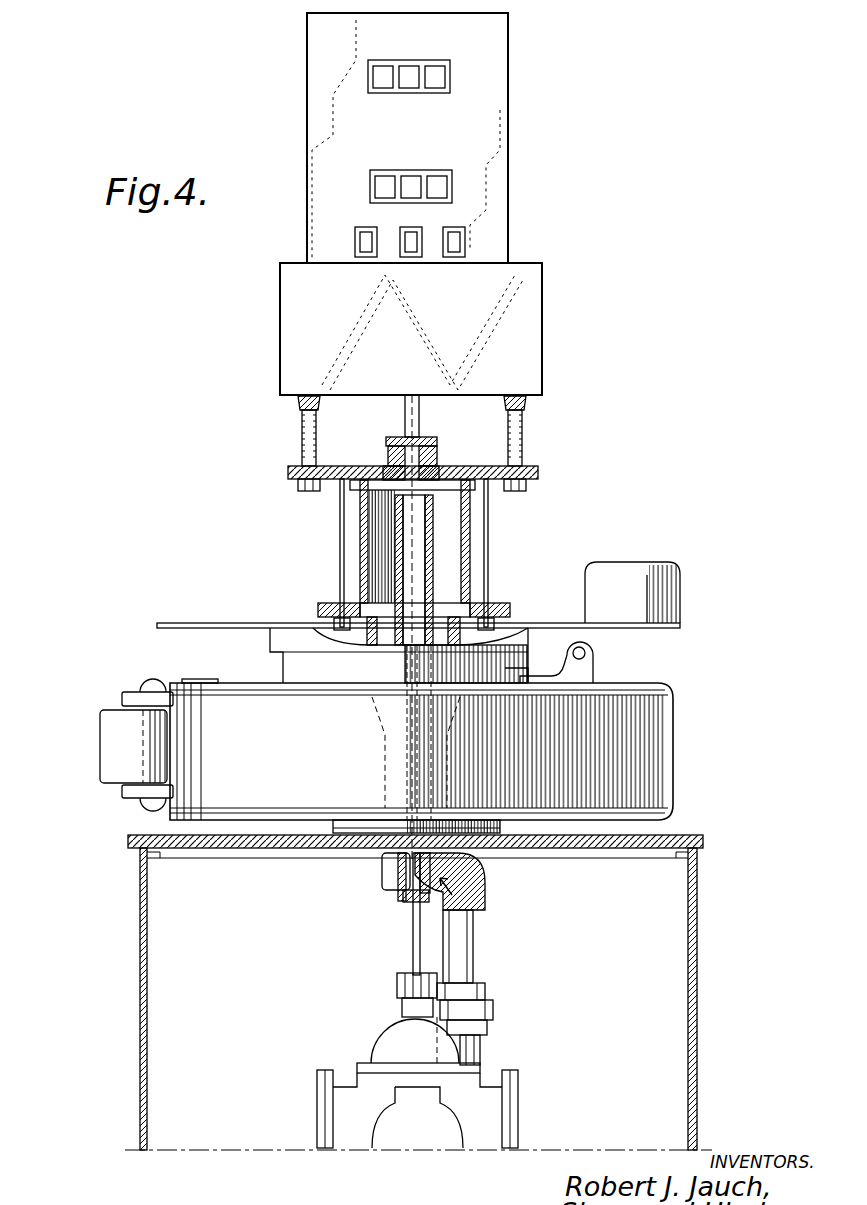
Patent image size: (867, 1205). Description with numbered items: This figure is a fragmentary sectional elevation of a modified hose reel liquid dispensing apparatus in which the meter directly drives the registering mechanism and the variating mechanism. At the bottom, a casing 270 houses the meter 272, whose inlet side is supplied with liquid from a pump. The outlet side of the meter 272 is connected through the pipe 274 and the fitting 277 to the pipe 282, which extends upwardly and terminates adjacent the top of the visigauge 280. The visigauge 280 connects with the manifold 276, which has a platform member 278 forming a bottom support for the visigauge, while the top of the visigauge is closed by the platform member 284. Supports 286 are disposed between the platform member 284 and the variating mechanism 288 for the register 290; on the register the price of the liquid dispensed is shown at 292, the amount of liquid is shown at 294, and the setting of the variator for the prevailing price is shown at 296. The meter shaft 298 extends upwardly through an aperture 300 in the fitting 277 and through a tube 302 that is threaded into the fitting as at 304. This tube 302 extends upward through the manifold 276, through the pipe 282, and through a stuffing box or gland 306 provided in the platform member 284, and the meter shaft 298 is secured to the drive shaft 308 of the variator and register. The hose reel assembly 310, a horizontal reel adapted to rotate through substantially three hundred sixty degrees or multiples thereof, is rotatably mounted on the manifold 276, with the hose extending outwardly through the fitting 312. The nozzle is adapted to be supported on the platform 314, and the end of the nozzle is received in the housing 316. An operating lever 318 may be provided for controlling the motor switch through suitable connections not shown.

The casing 270 is at (697, 970).
The meter 272 is at (512, 1100).
The pipe 274 is at (475, 943).
The manifold 276 is at (448, 766).
The fitting 277 is at (482, 893).
The platform member 278 is at (490, 615).
The visigauge 280 is at (470, 515).
The pipe 282 is at (395, 538).
The platform member 284 is at (538, 468).
The supports 286 is at (526, 416).
The variating mechanism 288 is at (543, 318).
The register 290 is at (498, 112).
The price indication 292 is at (452, 72).
The amount indication 294 is at (454, 185).
The variator setting 296 is at (466, 238).
The meter shaft 298 is at (412, 943).
The aperture 300 is at (405, 900).
The tube 302 is at (385, 868).
The threaded connection 304 is at (396, 893).
The stuffing box or gland 306 is at (437, 452).
The drive shaft 308 is at (402, 408).
The hose reel assembly 310 is at (660, 752).
The fitting 312 is at (125, 733).
The platform 314 is at (200, 623).
The housing 316 is at (625, 565).
The operating lever 318 is at (593, 657).